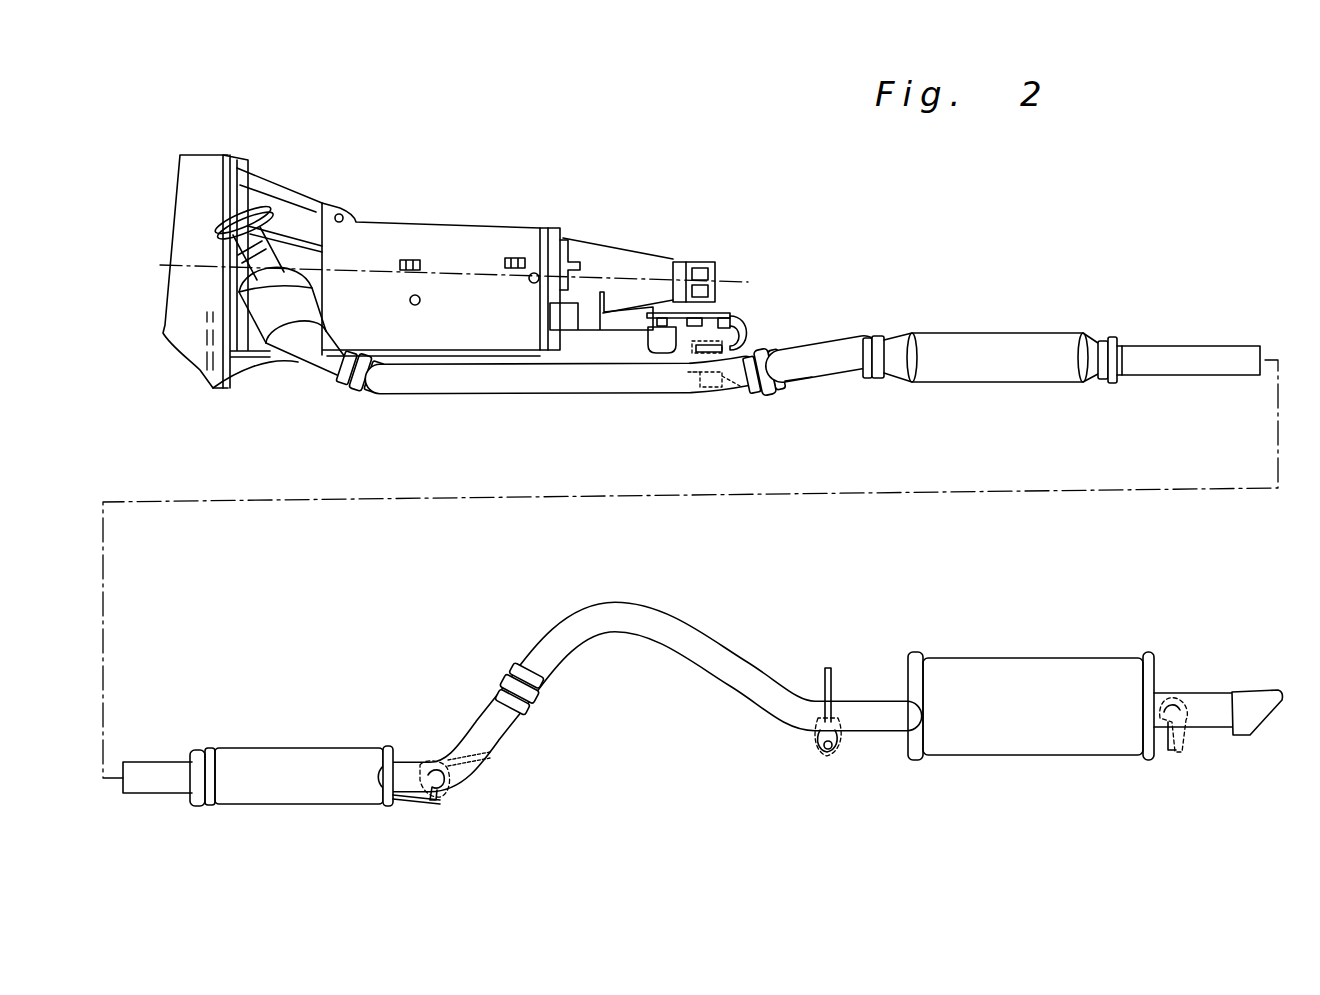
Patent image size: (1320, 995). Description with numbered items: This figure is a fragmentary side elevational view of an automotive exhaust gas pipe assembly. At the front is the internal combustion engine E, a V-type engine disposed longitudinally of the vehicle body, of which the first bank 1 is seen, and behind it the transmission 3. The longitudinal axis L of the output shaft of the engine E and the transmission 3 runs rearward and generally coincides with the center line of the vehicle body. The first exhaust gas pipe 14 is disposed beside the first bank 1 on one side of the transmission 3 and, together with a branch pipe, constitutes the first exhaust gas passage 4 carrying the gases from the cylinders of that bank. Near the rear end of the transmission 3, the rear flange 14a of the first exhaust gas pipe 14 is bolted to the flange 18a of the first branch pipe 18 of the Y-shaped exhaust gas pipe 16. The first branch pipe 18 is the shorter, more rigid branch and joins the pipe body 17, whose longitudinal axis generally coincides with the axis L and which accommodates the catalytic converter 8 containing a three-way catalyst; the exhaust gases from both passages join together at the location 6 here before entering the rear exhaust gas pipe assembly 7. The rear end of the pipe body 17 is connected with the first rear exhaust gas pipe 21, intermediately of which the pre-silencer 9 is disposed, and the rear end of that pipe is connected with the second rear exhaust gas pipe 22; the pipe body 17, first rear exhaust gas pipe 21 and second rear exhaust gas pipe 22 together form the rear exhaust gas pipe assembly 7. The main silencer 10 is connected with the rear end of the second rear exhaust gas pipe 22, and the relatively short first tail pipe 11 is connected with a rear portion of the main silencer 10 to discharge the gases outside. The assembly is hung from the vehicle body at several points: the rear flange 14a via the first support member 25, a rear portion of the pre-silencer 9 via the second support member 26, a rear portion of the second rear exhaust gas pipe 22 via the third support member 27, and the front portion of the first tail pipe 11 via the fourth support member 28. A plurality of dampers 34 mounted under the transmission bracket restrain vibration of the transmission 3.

The internal combustion engine E is at (261, 242).
The first bank 1 is at (205, 200).
The transmission 3 is at (455, 228).
The first exhaust gas passage 4 is at (450, 402).
The location 6 is at (827, 356).
The rear exhaust gas pipe assembly 7 is at (1179, 351).
The catalytic converter 8 is at (983, 340).
The pre-silencer 9 is at (263, 757).
The main silencer 10 is at (1005, 664).
The first tail pipe 11 is at (1220, 720).
The first exhaust gas pipe 14 is at (567, 382).
The rear flange 14a is at (754, 395).
The Y-shaped exhaust gas pipe 16 is at (889, 348).
The pipe body 17 is at (853, 369).
The first branch pipe 18 is at (803, 370).
The flange 18a is at (758, 396).
The first rear exhaust gas pipe 21 is at (1217, 370).
The second rear exhaust gas pipe 22 is at (664, 642).
The first support member 25 is at (758, 330).
The second support member 26 is at (450, 800).
The third support member 27 is at (812, 752).
The fourth support member 28 is at (1172, 762).
The dampers 34 is at (662, 345).
The longitudinal axis L is at (731, 246).